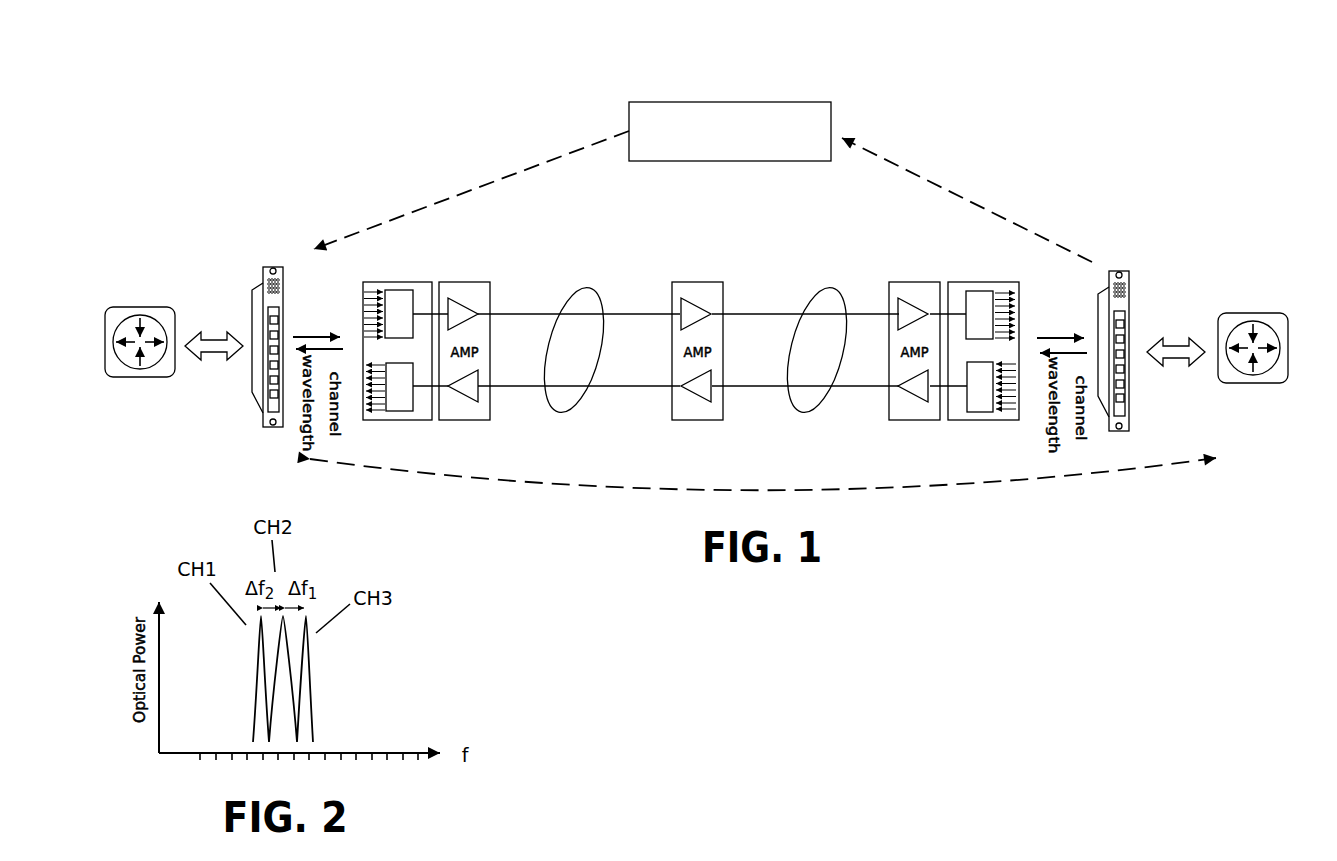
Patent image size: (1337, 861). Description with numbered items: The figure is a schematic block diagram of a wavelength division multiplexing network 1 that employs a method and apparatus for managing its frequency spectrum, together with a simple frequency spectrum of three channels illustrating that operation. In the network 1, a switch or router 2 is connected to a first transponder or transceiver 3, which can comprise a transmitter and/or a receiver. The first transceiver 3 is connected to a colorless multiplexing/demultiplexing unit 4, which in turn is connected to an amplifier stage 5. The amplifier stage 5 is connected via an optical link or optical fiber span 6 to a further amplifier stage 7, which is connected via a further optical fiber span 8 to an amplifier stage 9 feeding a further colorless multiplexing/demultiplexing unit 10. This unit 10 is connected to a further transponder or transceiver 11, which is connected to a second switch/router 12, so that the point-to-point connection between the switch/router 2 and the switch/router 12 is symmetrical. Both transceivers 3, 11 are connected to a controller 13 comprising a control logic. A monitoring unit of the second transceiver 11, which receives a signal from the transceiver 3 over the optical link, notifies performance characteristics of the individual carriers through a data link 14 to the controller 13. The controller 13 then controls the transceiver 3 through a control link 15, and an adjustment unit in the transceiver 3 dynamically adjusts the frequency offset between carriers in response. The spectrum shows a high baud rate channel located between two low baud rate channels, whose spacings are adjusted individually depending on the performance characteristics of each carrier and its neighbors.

The WDM network 1 is at (1066, 68).
The switch or router 2 is at (141, 378).
The first transponder or transceiver 3 is at (273, 427).
The colorless multiplexing/demultiplexing unit 4 is at (404, 420).
The amplifier stage 5 is at (470, 420).
The optical link or optical fiber span 6 is at (573, 362).
The further amplifier stage 7 is at (698, 420).
The further optical link or fiber span 8 is at (816, 362).
The amplifier stage 9 is at (914, 420).
The further colorless multiplexing/demultiplexing unit 10 is at (983, 420).
The further transponder or transceiver 11 is at (1118, 433).
The switch/router 12 is at (1255, 384).
The controller 13 is at (746, 102).
The data link 14 is at (1019, 214).
The control link 15 is at (503, 178).